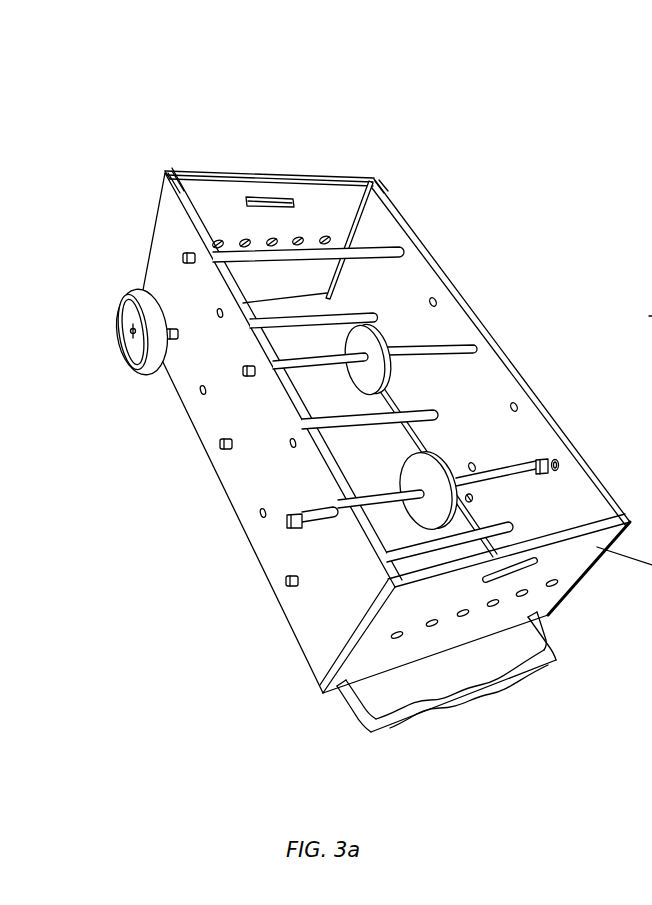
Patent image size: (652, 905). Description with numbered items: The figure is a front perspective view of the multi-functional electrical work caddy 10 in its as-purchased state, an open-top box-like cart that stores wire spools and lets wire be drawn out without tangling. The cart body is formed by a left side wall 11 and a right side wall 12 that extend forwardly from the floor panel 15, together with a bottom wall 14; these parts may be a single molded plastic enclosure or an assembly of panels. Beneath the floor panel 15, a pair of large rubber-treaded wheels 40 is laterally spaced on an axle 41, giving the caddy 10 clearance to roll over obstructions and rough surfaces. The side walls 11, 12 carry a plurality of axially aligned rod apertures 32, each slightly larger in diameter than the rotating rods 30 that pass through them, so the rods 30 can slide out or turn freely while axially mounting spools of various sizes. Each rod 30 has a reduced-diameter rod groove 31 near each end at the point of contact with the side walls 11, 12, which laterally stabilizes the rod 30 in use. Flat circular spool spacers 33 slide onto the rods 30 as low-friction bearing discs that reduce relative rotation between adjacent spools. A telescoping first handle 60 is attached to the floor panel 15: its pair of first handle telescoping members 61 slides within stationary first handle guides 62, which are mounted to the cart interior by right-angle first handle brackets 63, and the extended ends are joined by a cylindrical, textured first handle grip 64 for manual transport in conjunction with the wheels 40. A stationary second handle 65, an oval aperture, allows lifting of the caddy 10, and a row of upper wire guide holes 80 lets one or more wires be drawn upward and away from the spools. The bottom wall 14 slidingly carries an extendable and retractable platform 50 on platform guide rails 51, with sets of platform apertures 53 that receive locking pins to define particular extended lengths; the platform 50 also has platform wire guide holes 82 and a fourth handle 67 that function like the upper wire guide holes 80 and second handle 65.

The multi-functional electrical work caddy 10 is at (562, 157).
The left side wall 11 is at (389, 197).
The right side wall 12 is at (267, 555).
The bottom wall 14 is at (157, 200).
The floor panel 15 is at (257, 313).
The rotating rod 30 is at (396, 249).
The rod groove 31 is at (303, 527).
The rod aperture 32 is at (218, 310).
The spool spacer 33 is at (380, 330).
The wheel 40 is at (123, 297).
The axle 41 is at (133, 331).
The platform 50 is at (200, 183).
The platform guide rail 51 is at (165, 172).
The platform aperture 53 is at (349, 240).
The first handle 60 is at (470, 316).
The first handle telescoping member 61 is at (347, 716).
The first handle guide 62 is at (416, 433).
The first handle bracket 63 is at (473, 498).
The first handle grip 64 is at (516, 673).
The second handle 65 is at (350, 657).
The fourth handle 67 is at (252, 196).
The upper wire guide hole 80 is at (493, 605).
The platform wire guide hole 82 is at (320, 240).